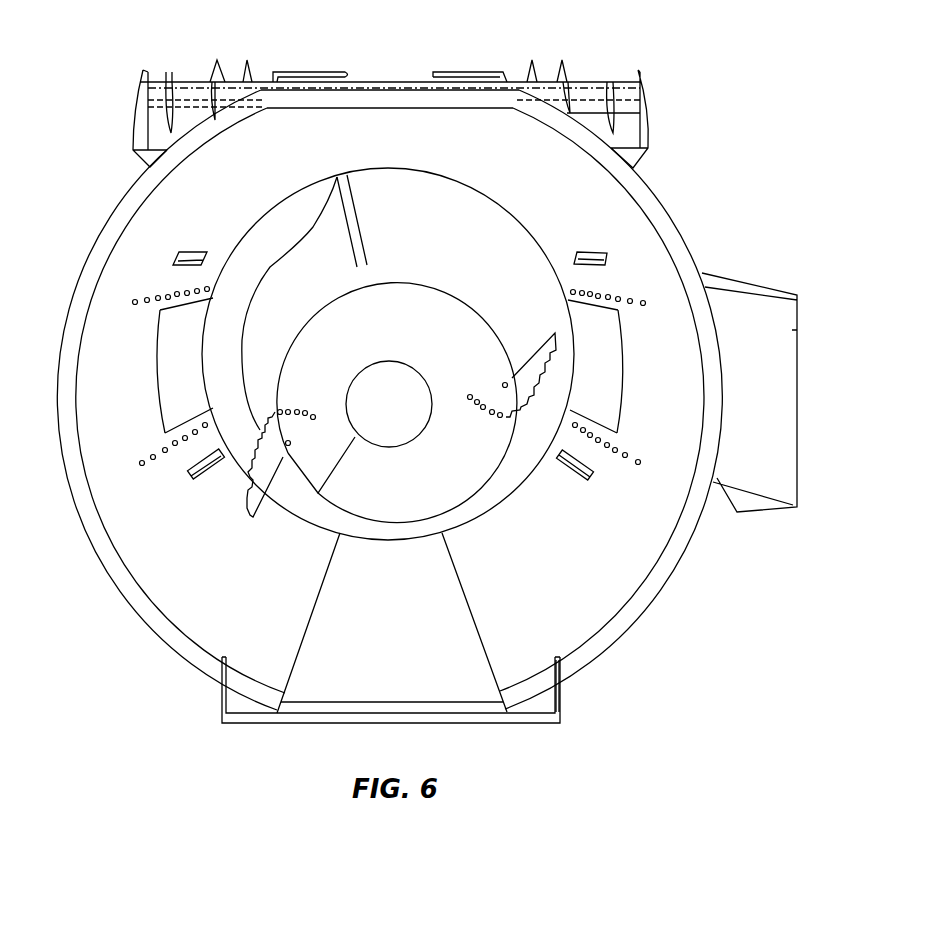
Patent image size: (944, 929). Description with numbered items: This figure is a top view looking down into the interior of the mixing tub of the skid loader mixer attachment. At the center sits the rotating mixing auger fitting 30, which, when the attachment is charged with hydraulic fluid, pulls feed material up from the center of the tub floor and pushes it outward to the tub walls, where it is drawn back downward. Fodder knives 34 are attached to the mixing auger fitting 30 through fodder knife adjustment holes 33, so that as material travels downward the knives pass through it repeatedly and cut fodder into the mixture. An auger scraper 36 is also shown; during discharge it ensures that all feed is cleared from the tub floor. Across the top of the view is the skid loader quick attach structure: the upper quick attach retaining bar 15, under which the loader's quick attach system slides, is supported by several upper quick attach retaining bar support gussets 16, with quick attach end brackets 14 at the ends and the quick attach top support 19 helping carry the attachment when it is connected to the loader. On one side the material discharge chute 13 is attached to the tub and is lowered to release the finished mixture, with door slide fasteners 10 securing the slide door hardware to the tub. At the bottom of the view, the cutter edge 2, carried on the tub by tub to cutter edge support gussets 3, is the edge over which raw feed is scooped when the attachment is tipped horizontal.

The cutter edge 2 is at (293, 720).
The tub to cutter edge support gussets 3 is at (533, 708).
The door slide fasteners 10 is at (140, 463).
The material discharge chute 13 is at (783, 390).
The quick attach end brackets 14 is at (653, 127).
The upper quick attach retaining bar 15 is at (590, 95).
The upper quick attach retaining bar support gussets 16 is at (172, 82).
The quick attach top support 19 is at (147, 130).
The mixing auger fitting 30 is at (443, 288).
The fodder knife adjustment holes 33 is at (298, 410).
The fodder knives 34 is at (542, 370).
The auger scraper 36 is at (358, 225).